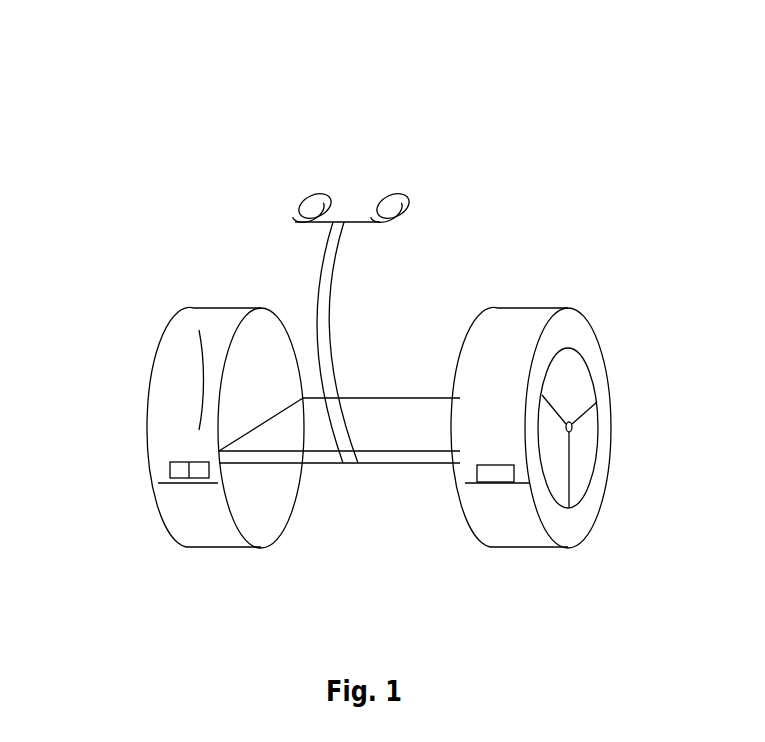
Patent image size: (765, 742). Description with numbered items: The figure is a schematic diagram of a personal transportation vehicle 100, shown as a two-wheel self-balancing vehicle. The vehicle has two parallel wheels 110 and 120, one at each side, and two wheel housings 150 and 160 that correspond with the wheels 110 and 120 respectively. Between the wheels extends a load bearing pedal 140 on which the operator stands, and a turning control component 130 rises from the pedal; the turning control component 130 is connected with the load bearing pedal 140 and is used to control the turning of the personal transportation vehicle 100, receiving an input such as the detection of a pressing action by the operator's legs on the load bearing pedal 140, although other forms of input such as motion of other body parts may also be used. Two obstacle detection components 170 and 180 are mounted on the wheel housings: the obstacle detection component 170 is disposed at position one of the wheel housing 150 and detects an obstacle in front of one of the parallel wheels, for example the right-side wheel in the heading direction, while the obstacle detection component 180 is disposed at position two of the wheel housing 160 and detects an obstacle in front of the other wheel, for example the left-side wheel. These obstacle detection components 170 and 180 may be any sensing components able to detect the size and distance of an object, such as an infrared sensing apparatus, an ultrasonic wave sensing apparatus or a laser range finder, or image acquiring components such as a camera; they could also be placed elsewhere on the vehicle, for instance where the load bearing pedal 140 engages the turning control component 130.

The personal transportation vehicle 100 is at (360, 57).
The wheel 110 is at (167, 357).
The wheel 120 is at (558, 348).
The turning control component 130 is at (408, 207).
The load bearing pedal 140 is at (378, 463).
The wheel housing 150 is at (165, 400).
The wheel housing 160 is at (515, 335).
The obstacle detection component 170 is at (170, 472).
The obstacle detection component 180 is at (477, 474).